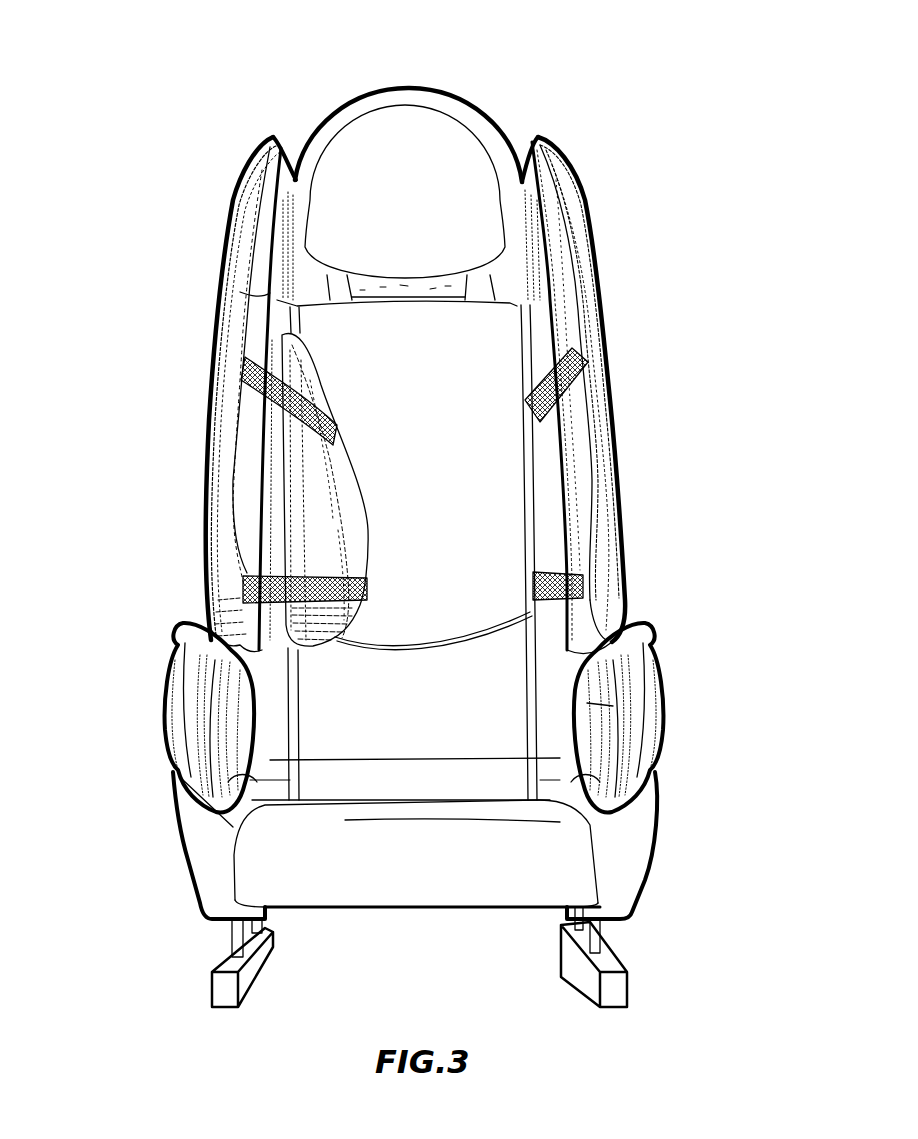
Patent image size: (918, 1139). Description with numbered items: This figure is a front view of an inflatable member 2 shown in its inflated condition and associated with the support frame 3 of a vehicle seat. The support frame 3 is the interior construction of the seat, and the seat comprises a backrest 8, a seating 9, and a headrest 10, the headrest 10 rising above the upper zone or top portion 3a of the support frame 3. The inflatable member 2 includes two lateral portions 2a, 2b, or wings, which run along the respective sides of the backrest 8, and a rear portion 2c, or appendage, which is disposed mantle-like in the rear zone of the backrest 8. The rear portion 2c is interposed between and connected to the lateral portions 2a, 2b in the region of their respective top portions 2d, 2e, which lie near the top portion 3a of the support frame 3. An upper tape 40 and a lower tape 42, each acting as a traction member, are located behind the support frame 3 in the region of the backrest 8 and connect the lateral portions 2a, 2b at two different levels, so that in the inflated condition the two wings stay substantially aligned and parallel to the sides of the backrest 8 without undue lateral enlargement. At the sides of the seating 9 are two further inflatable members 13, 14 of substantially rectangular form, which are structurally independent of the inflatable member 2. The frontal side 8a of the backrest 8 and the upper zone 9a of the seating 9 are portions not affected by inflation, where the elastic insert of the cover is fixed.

The headrest 10 is at (427, 131).
The inflatable member 2 is at (566, 145).
The lateral portion 2a is at (605, 465).
The lateral portion 2b is at (215, 516).
The rear portion 2c is at (521, 178).
The top portion 2d is at (598, 262).
The top portion 2e is at (222, 236).
The support frame 3 is at (178, 853).
The top portion of the support frame 3a is at (540, 330).
The upper tape 40 is at (603, 398).
The lower tape 42 is at (595, 585).
The inflatable member 13 is at (667, 700).
The inflatable member 14 is at (173, 717).
The backrest 8 is at (503, 770).
The frontal side of the backrest 8a is at (410, 743).
The seating 9 is at (267, 862).
The upper zone of the seating 9a is at (350, 820).